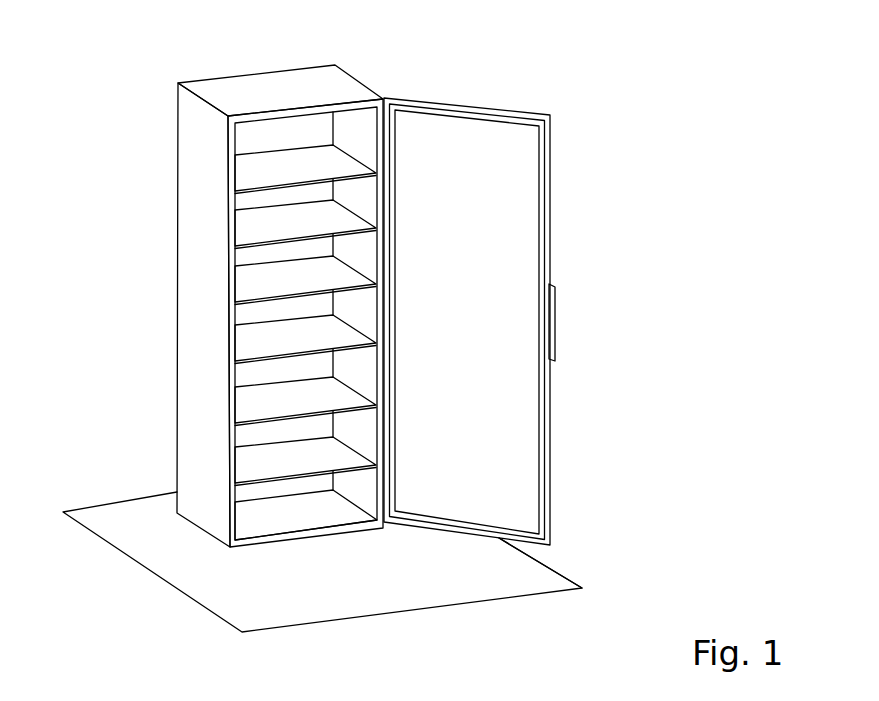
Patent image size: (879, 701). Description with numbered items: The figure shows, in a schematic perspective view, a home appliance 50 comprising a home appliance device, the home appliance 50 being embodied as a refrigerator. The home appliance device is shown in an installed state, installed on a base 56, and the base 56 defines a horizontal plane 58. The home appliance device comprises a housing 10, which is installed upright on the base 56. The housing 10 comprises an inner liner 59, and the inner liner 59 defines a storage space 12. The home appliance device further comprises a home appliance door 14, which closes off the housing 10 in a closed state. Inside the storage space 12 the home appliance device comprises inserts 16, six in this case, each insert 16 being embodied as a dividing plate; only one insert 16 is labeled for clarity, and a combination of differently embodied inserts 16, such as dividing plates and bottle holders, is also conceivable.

The home appliance 50 is at (349, 273).
The housing 10 is at (245, 100).
The storage space 12 is at (255, 375).
The home appliance door 14 is at (552, 170).
The insert 16 is at (277, 342).
The base 56 is at (570, 558).
The horizontal plane 58 is at (257, 598).
The inner liner 59 is at (343, 100).